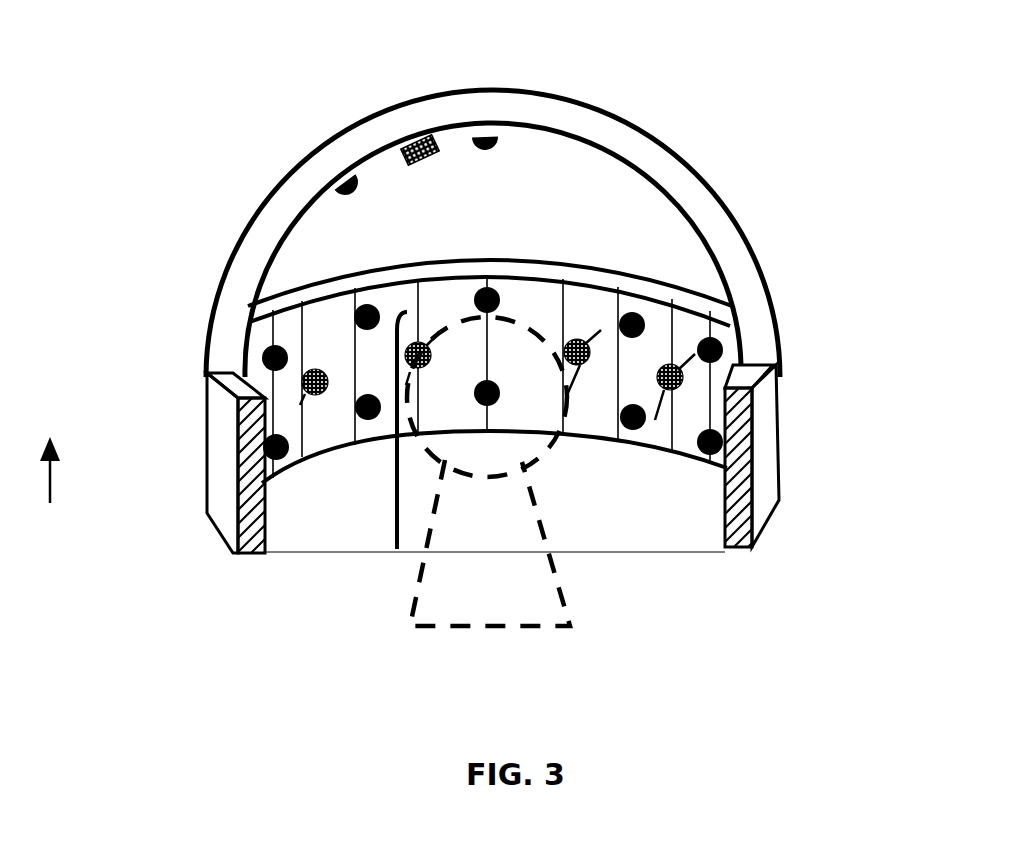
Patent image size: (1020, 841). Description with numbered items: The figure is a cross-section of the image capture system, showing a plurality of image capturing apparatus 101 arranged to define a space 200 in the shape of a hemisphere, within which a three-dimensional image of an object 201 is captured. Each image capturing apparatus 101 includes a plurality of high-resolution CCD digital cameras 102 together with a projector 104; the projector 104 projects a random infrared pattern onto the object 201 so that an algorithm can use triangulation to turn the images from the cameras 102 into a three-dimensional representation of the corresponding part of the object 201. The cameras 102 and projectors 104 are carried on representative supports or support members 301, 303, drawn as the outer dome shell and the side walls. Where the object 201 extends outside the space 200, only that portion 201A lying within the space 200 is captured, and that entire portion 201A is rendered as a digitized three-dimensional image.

The image capturing apparatus 101 is at (456, 78).
The digital camera 102 is at (368, 407).
The projector 104 is at (432, 135).
The space 200 is at (630, 483).
The object 201 is at (515, 537).
The portion of object 201A is at (396, 437).
The support member 301 is at (642, 142).
The support member 303 is at (223, 462).